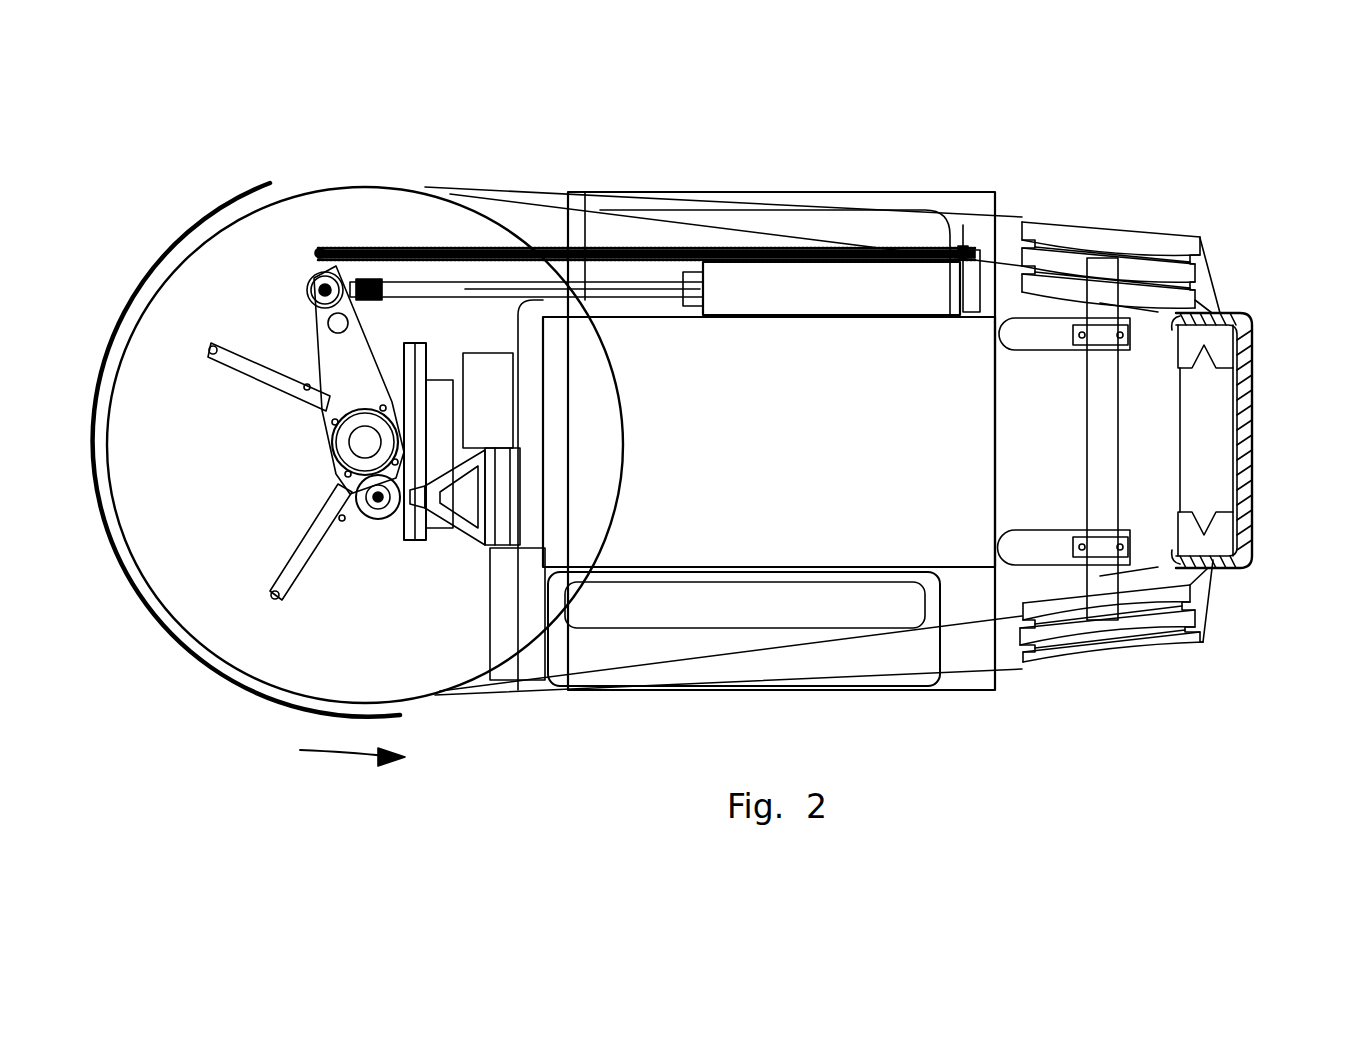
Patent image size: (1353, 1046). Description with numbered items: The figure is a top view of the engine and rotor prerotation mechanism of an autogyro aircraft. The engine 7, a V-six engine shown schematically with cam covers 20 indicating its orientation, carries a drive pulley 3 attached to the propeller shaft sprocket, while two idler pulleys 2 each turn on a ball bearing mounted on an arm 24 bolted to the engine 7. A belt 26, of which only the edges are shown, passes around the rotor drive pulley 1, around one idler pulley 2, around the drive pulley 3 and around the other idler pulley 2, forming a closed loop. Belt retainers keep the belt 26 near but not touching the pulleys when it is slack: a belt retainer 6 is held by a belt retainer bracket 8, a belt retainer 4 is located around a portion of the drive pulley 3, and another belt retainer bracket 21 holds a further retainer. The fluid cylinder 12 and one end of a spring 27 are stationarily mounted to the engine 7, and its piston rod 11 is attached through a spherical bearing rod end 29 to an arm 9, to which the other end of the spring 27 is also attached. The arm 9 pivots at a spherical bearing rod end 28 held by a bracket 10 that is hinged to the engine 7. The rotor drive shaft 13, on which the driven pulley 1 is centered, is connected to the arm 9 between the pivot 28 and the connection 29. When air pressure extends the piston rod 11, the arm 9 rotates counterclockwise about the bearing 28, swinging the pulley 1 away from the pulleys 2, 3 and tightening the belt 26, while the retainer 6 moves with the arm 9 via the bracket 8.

The rotor drive pulley 1 is at (192, 642).
The idler pulleys 2 is at (1130, 228).
The drive pulley 3 is at (1213, 407).
The belt retainer 4 is at (1255, 557).
The belt retainer 6 is at (252, 690).
The engine 7 is at (932, 510).
The belt retainer bracket 8 is at (243, 372).
The arm 9 is at (310, 345).
The bracket 10 is at (450, 530).
The piston rod 11 is at (445, 285).
The fluid cylinder 12 is at (740, 270).
The rotor drive shaft 13 is at (323, 435).
The cam covers 20 is at (866, 192).
The belt retainer bracket 21 is at (1180, 632).
The arm 24 is at (1000, 343).
The belt 26 is at (948, 680).
The spring 27 is at (380, 246).
The spherical bearing rod end 28 is at (378, 520).
The spherical bearing rod end 29 is at (318, 284).